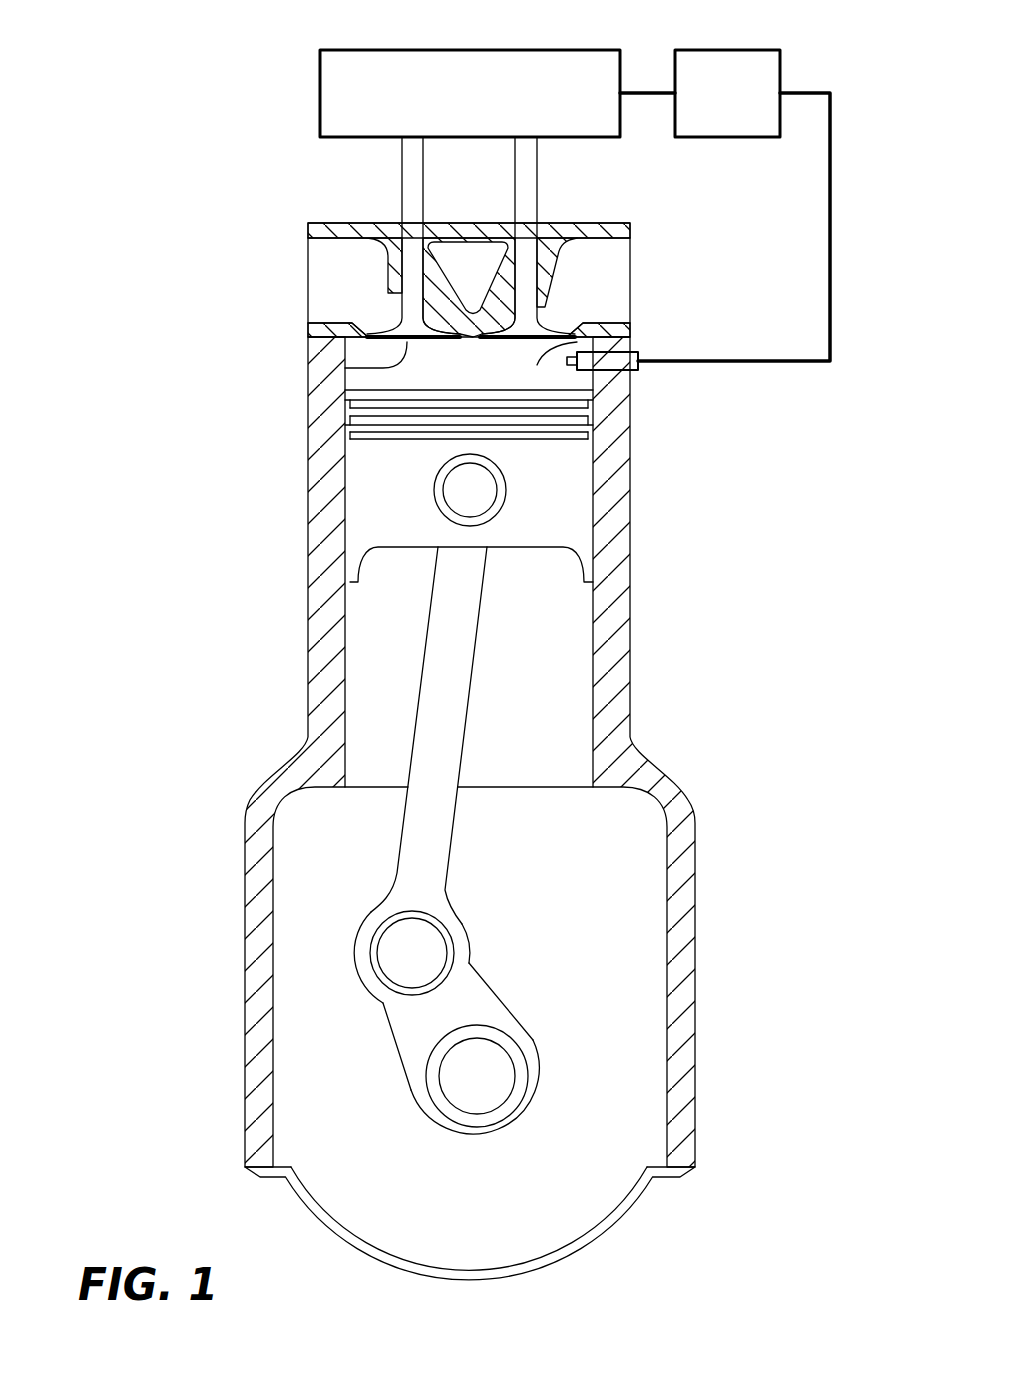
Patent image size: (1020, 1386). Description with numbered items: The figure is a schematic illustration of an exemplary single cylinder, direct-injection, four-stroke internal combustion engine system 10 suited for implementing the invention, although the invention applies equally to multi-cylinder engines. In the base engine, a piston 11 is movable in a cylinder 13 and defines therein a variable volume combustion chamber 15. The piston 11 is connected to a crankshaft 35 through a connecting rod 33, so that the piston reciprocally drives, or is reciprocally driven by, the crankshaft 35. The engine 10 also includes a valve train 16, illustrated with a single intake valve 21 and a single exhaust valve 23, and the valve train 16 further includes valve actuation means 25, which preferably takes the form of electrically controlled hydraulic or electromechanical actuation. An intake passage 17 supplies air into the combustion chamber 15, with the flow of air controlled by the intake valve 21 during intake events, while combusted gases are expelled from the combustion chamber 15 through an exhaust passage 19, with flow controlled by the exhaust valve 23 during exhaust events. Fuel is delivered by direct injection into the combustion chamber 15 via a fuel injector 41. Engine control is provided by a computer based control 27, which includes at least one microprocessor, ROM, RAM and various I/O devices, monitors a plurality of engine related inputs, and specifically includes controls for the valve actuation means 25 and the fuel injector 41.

The internal combustion engine system 10 is at (268, 78).
The piston 11 is at (393, 527).
The cylinder 13 is at (545, 672).
The combustion chamber 15 is at (540, 365).
The valve train 16 is at (278, 186).
The intake passage 17 is at (320, 283).
The exhaust passage 19 is at (605, 275).
The intake valve 21 is at (360, 368).
The exhaust valve 23 is at (558, 330).
The valve actuation means 25 is at (490, 113).
The computer based control 27 is at (746, 113).
The connecting rod 33 is at (435, 718).
The crankshaft 35 is at (400, 1040).
The fuel injector 41 is at (623, 362).